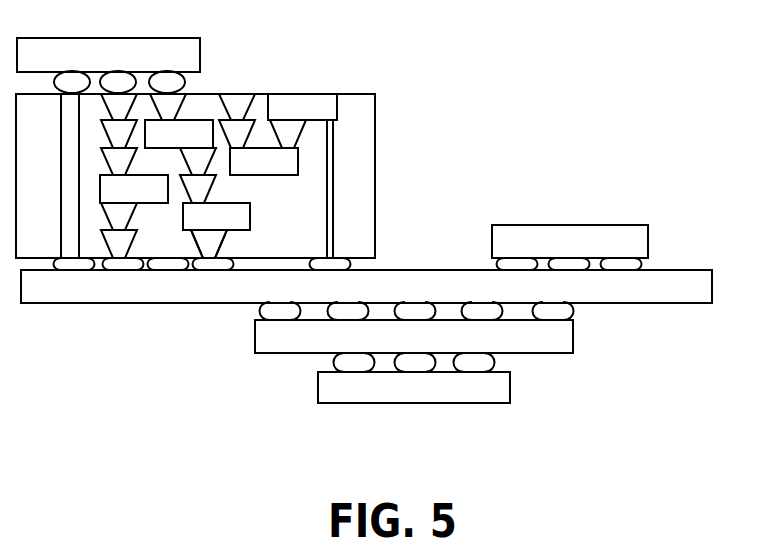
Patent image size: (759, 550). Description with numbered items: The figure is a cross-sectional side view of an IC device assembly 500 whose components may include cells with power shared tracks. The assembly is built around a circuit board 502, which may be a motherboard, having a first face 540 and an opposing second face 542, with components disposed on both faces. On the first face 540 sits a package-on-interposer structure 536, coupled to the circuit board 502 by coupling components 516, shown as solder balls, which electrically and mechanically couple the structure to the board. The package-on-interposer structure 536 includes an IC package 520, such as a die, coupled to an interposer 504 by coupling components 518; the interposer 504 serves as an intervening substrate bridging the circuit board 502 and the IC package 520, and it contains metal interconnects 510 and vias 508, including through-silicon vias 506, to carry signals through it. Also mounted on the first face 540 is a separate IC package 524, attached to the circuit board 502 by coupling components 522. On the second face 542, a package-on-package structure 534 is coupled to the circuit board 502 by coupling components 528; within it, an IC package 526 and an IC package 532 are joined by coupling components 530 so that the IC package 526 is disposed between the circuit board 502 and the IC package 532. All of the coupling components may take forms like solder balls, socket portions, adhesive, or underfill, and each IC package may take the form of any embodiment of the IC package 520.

The IC device assembly 500 is at (555, 107).
The circuit board 502 is at (366, 286).
The interposer 504 is at (224, 145).
The through-silicon vias 506 is at (335, 198).
The vias 508 is at (220, 247).
The metal interconnects 510 is at (238, 192).
The coupling components 516 is at (373, 265).
The coupling components 518 is at (192, 85).
The IC package 520 is at (86, 67).
The coupling components 522 is at (665, 225).
The IC package 524 is at (546, 256).
The IC package 526 is at (392, 349).
The coupling components 528 is at (255, 313).
The coupling components 530 is at (507, 362).
The IC package 532 is at (392, 399).
The package-on-package structure 534 is at (327, 352).
The package-on-interposer structure 536 is at (457, 47).
The first face 540 is at (617, 213).
The second face 542 is at (657, 345).